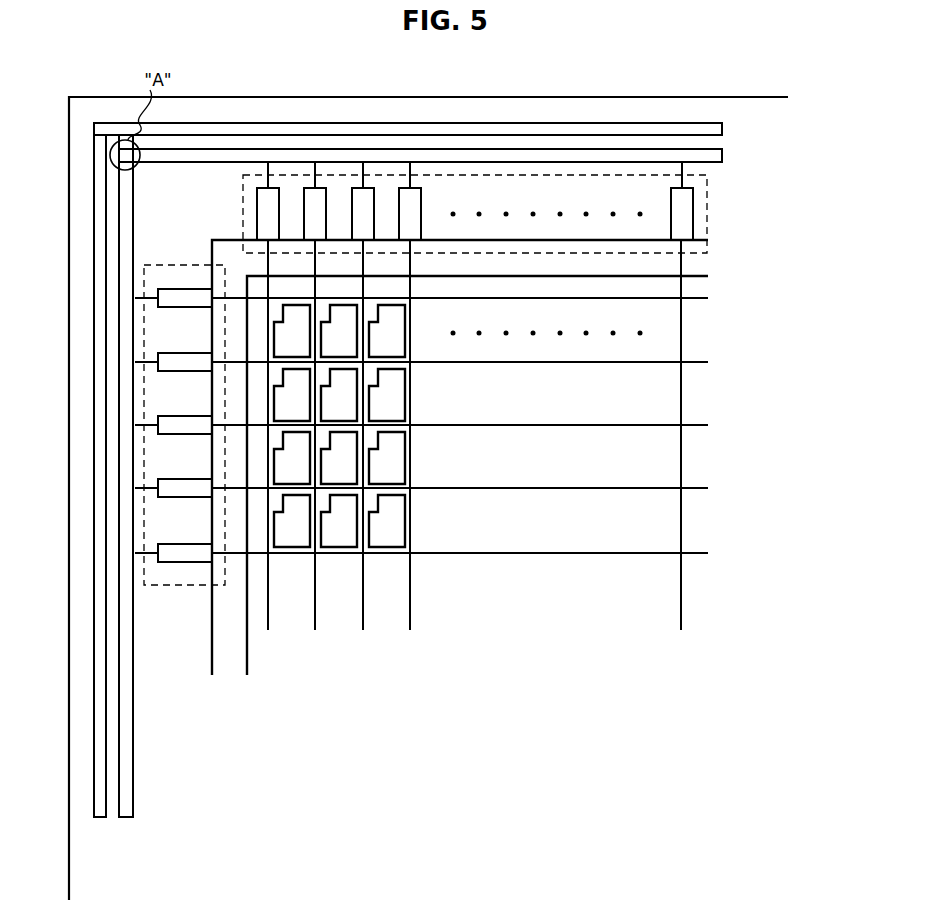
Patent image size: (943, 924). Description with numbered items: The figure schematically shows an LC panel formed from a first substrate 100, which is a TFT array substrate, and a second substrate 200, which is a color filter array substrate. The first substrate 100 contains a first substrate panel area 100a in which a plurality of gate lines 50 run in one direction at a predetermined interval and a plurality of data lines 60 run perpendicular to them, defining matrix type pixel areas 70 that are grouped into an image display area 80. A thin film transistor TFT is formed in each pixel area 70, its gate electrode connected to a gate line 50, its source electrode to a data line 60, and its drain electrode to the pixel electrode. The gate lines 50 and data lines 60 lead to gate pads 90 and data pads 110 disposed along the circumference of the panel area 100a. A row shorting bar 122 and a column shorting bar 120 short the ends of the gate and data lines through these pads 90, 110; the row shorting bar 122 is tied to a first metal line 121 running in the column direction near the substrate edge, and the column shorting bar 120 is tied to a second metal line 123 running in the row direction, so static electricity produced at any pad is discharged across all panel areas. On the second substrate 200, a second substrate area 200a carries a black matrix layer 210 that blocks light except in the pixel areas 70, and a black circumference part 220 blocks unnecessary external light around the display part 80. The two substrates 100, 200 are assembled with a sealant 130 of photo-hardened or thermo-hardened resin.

The first substrate 100 is at (634, 97).
The first substrate panel area 100a is at (788, 256).
The second metal line 123 is at (722, 130).
The row shorting bar 122 is at (722, 158).
The first metal line 121 is at (97, 820).
The column shorting bar 120 is at (126, 820).
The data pads 110 is at (707, 215).
The second substrate 200 is at (220, 238).
The black circumference part 220 is at (718, 241).
The gate pads 90 is at (166, 266).
The gate lines 50 is at (706, 360).
The data lines 60 is at (681, 590).
The image display area 80 is at (717, 298).
The pixel areas 70 is at (290, 548).
The black matrix layer 210 is at (275, 532).
The thin film transistor TFT is at (352, 512).
The sealant 130 is at (247, 655).
The second substrate area 200a is at (445, 694).